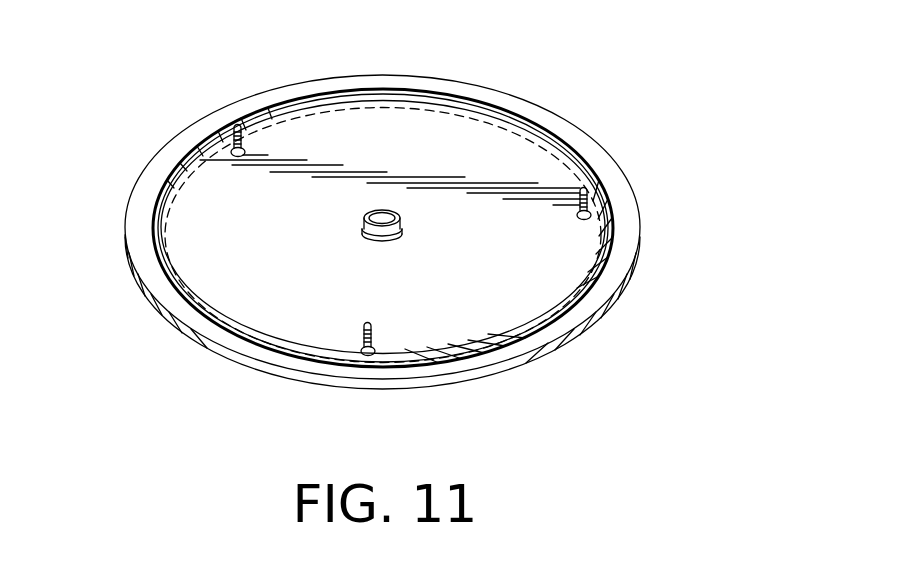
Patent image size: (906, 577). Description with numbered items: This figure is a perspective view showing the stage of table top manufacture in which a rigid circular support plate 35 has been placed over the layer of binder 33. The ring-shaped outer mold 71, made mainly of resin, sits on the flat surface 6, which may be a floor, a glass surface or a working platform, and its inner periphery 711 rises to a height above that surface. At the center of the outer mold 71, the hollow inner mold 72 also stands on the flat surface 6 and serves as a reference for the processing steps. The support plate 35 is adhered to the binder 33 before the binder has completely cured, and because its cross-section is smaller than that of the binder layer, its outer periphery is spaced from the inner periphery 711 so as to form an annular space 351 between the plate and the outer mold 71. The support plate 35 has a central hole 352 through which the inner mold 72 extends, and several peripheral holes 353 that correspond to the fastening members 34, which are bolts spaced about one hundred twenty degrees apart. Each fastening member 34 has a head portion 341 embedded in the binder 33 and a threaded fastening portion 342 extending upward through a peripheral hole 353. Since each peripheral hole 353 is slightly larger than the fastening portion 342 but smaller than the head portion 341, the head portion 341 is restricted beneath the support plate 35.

The flat surface 6 is at (593, 95).
The outer mold 71 is at (600, 147).
The inner periphery 711 is at (513, 115).
The binder 33 is at (608, 207).
The fastening members 34 is at (250, 141).
The head portion 341 is at (195, 137).
The peripheral holes 353 is at (214, 122).
The annular space 351 is at (607, 232).
The support plate 35 is at (580, 253).
The fastening portion 342 is at (238, 124).
The inner mold 72 is at (365, 221).
The central hole 352 is at (398, 240).